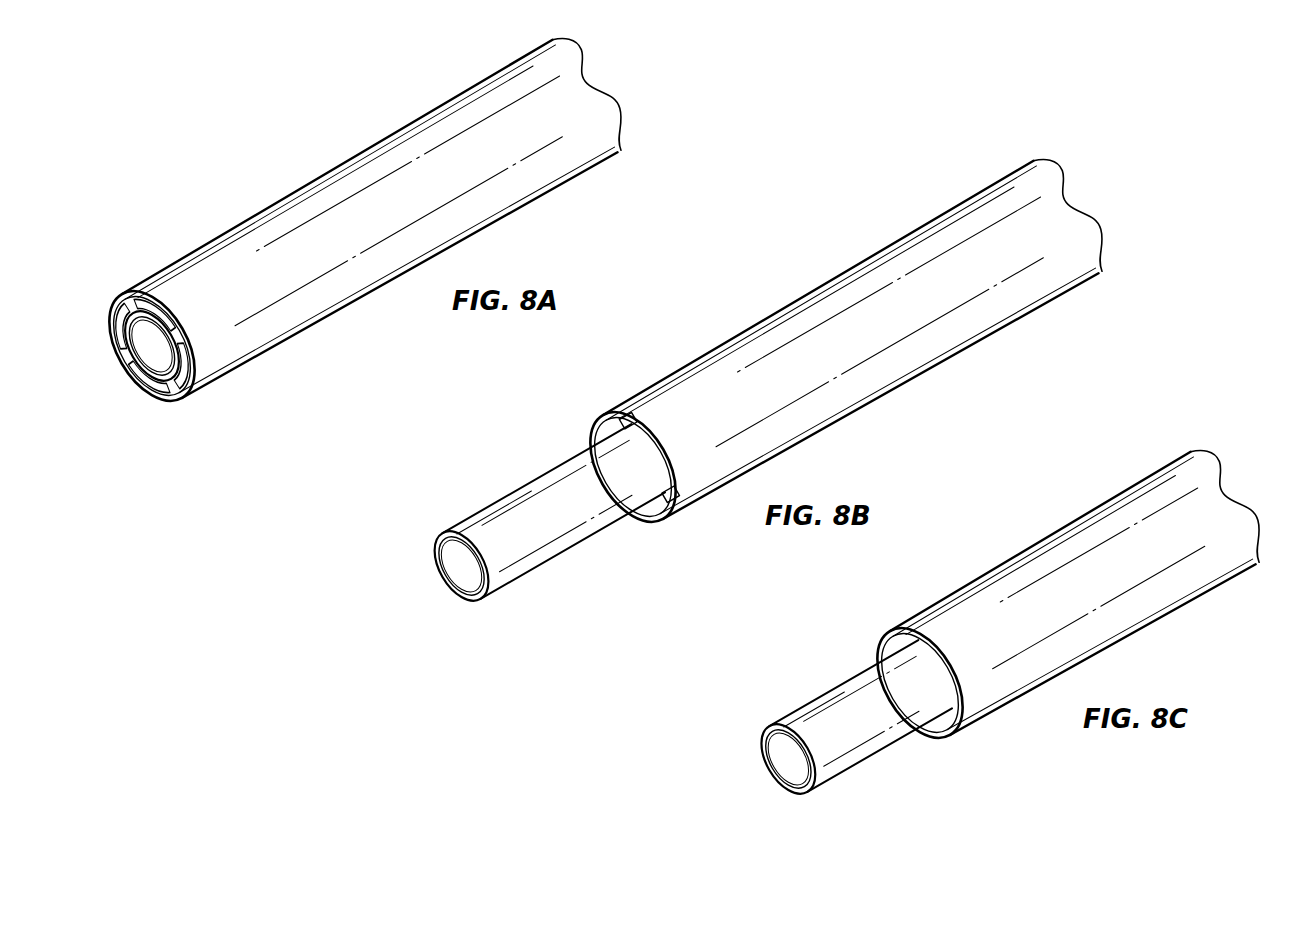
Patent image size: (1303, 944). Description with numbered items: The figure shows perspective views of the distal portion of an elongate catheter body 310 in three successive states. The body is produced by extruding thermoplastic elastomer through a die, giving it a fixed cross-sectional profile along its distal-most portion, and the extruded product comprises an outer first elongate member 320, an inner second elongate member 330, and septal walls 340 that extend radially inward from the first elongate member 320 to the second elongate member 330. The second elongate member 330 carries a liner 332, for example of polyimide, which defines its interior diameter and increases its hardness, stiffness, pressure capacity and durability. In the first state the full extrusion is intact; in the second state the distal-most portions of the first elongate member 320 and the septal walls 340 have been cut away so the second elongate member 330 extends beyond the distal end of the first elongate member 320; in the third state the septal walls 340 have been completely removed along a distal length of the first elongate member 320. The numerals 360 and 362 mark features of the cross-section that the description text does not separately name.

In FIG. 8A, the elongate catheter body 310 is at (344, 253).
In FIG. 8B, the elongate catheter body 310 is at (746, 379).
In FIG. 8C, the elongate catheter body 310 is at (987, 614).
In FIG. 8A, the first elongate member 320 is at (432, 141).
In FIG. 8B, the first elongate member 320 is at (913, 257).
In FIG. 8C, the first elongate member 320 is at (1163, 492).
In FIG. 8A, the second elongate member 330 is at (137, 377).
In FIG. 8B, the second elongate member 330 is at (558, 528).
In FIG. 8C, the second elongate member 330 is at (838, 712).
In FIG. 8A, the liner 332 is at (128, 343).
In FIG. 8B, the liner 332 is at (440, 562).
In FIG. 8C, the liner 332 is at (762, 763).
In FIG. 8A, the septal walls 340 is at (173, 312).
In FIG. 8B, the septal walls 340 is at (621, 414).
In FIG. 8A, the spacer insert 360 is at (325, 269).
In FIG. 8A, the channels between ribs 362 is at (125, 341).